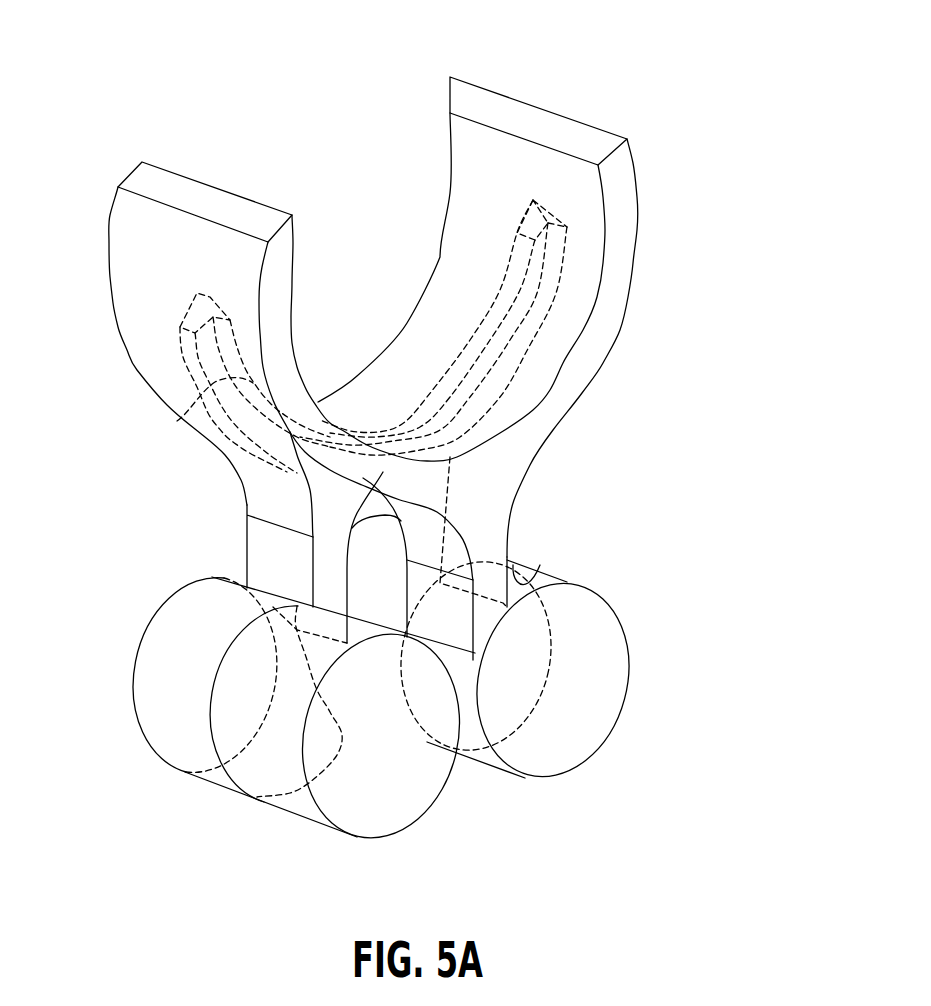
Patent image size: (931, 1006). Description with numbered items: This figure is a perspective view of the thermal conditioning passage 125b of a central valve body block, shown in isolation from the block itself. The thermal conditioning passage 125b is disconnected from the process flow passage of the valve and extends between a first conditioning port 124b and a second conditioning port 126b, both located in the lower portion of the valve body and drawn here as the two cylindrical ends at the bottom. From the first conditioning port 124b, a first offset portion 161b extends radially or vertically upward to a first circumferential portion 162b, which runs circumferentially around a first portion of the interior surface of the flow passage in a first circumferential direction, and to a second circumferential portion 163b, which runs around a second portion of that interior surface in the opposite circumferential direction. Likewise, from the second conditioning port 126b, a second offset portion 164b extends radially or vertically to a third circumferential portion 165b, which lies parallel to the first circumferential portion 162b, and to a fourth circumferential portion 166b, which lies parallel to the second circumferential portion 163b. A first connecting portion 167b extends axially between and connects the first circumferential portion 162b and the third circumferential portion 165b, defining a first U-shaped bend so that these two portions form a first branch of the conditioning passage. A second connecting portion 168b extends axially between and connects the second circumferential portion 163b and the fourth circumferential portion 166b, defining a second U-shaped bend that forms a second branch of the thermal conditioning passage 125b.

The thermal conditioning passage 125b is at (686, 122).
The first conditioning port 124b is at (348, 829).
The second conditioning port 126b is at (533, 582).
The first offset portion 161b is at (270, 547).
The second offset portion 164b is at (478, 540).
The first circumferential portion 162b is at (148, 338).
The fourth circumferential portion 166b is at (555, 337).
The second circumferential portion 163b is at (470, 221).
The third circumferential portion 165b is at (177, 421).
The first connecting portion 167b is at (187, 239).
The second connecting portion 168b is at (515, 153).